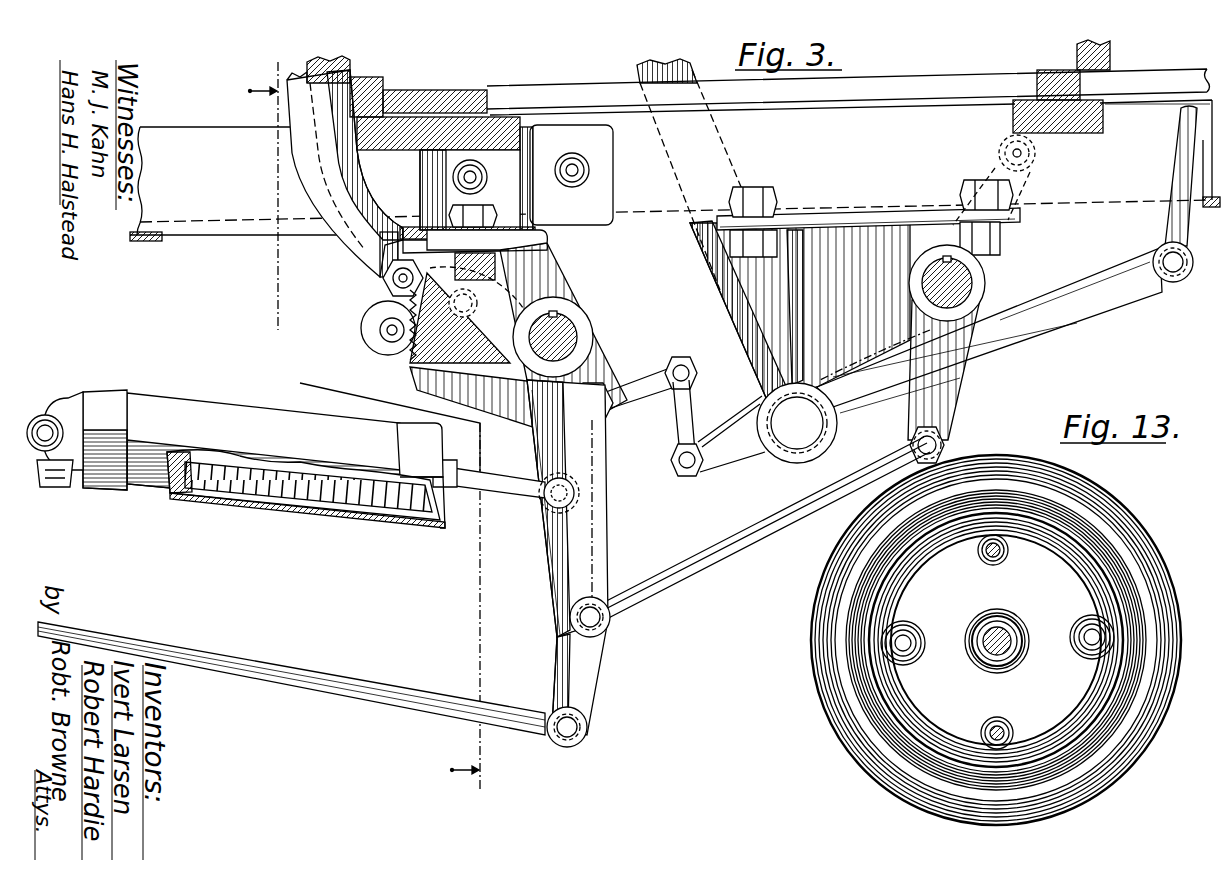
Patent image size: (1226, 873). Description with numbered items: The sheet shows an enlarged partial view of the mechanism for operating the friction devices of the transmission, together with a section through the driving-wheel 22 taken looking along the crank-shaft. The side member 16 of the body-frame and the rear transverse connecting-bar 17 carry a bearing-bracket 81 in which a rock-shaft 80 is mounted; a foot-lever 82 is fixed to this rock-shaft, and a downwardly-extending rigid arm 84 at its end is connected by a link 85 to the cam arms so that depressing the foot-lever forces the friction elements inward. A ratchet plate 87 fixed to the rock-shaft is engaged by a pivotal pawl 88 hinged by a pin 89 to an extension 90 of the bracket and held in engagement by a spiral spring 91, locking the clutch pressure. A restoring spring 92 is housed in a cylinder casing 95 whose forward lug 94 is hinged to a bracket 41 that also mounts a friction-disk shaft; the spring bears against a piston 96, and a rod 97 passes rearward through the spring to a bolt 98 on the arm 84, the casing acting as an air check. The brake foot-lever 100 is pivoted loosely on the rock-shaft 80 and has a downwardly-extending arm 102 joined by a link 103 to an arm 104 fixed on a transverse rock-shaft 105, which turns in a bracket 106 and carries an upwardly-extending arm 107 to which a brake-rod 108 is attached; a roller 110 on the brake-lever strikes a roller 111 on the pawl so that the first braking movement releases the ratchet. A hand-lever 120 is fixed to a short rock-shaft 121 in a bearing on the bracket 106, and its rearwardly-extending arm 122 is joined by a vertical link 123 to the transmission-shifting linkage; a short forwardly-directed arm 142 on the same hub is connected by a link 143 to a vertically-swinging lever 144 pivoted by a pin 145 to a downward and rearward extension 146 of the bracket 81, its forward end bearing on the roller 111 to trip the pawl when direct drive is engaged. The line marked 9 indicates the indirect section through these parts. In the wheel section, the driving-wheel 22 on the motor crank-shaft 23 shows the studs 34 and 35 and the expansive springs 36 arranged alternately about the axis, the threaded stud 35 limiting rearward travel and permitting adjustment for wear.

In FIG. 3, the indirect section line 9 9 is at (372, 427).
In FIG. 3, the side members of the body-frame 16 is at (670, 184).
In FIG. 3, the transverse connecting-bars 17 is at (527, 163).
In FIG. 13, the driving-wheel 22 is at (1162, 548).
In FIG. 13, the motor crank-shaft 23 is at (1000, 627).
In FIG. 13, the stud 34 is at (990, 561).
In FIG. 13, the stud 35 is at (1007, 717).
In FIG. 13, the spiral expansively-acting springs 36 is at (1090, 617).
In FIG. 3, the bracket 41 is at (25, 440).
In FIG. 3, the rock-shaft 80 is at (580, 335).
In FIG. 3, the bearing-bracket 81 is at (562, 278).
In FIG. 3, the foot-lever 82 is at (345, 173).
In FIG. 3, the rigid arm 84 is at (580, 682).
In FIG. 3, the link 85 is at (343, 682).
In FIG. 3, the ratchet plate 87 is at (408, 372).
In FIG. 3, the pivotal pawl 88 is at (380, 320).
In FIG. 3, the pin or bolt 89 is at (382, 283).
In FIG. 3, the extension of the bracket 90 is at (447, 215).
In FIG. 3, the spiral spring 91 is at (390, 230).
In FIG. 3, the spring 92 is at (300, 500).
In FIG. 3, the lug 94 is at (68, 415).
In FIG. 3, the cylinder 95 is at (228, 417).
In FIG. 3, the piston or plunger 96 is at (175, 490).
In FIG. 3, the rod 97 is at (495, 478).
In FIG. 3, the bolt or pin 98 is at (547, 512).
In FIG. 3, the brake foot-lever 100 is at (352, 74).
In FIG. 3, the downwardly-extending arm 102 is at (598, 527).
In FIG. 3, the link 103 is at (725, 543).
In FIG. 3, the arm 104 is at (956, 397).
In FIG. 3, the rock-shaft 105 is at (982, 296).
In FIG. 3, the bracket 106 is at (855, 290).
In FIG. 3, the upwardly-extending fixed arm 107 is at (985, 168).
In FIG. 3, the brake-rod 108 is at (1182, 175).
In FIG. 3, the roller 110 is at (440, 382).
In FIG. 3, the roller 111 is at (362, 334).
In FIG. 3, the hand-lever 120 is at (637, 70).
In FIG. 3, the short rock-shaft 121 is at (797, 423).
In FIG. 3, the rearwardly-extending rigid arm 122 is at (1130, 316).
In FIG. 3, the vertical link 123 is at (1180, 222).
In FIG. 3, the short forwardly-directed rigid arm 142 is at (731, 434).
In FIG. 3, the link 143 is at (696, 420).
In FIG. 3, the vertically-swinging lever 144 is at (577, 409).
In FIG. 3, the pin 145 is at (628, 378).
In FIG. 3, the downward and rearward extension 146 is at (597, 393).